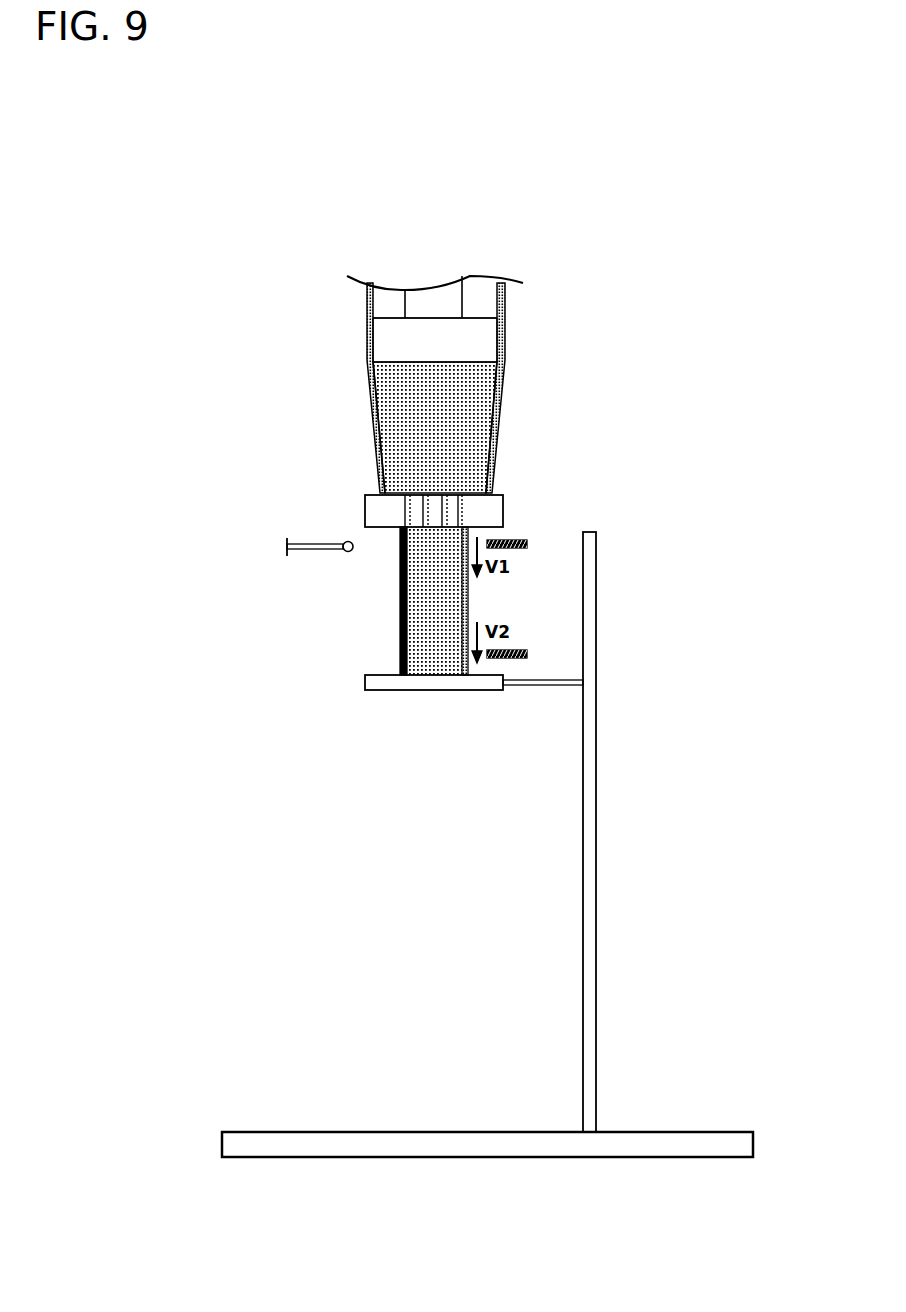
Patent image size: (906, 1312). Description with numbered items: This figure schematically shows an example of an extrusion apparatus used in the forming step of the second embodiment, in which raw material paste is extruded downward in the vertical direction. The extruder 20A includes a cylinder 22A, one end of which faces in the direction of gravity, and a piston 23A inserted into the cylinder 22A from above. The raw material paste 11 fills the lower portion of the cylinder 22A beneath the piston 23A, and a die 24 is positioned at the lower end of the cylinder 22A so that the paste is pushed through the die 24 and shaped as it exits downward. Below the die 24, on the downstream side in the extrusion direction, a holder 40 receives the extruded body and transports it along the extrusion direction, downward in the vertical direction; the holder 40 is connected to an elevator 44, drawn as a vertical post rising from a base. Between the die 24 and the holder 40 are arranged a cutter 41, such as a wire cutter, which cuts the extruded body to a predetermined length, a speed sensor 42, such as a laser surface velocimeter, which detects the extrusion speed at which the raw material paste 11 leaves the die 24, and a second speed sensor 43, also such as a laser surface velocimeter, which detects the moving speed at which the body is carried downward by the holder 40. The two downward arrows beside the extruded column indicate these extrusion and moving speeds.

The extruder 20A is at (313, 270).
The cylinder 22A is at (365, 312).
The piston 23A is at (487, 341).
The raw material paste 11 is at (470, 405).
The die 24 is at (495, 510).
The holder 40 is at (406, 693).
The cutter 41 is at (318, 552).
The speed sensor 42 is at (527, 544).
The speed sensor 43 is at (527, 654).
The elevator 44 is at (597, 745).